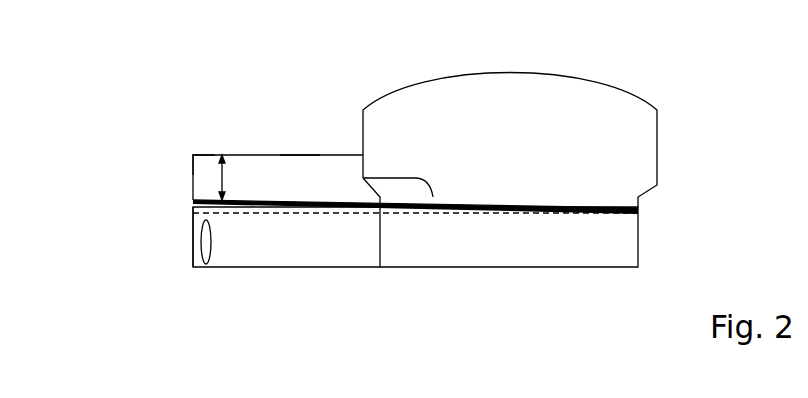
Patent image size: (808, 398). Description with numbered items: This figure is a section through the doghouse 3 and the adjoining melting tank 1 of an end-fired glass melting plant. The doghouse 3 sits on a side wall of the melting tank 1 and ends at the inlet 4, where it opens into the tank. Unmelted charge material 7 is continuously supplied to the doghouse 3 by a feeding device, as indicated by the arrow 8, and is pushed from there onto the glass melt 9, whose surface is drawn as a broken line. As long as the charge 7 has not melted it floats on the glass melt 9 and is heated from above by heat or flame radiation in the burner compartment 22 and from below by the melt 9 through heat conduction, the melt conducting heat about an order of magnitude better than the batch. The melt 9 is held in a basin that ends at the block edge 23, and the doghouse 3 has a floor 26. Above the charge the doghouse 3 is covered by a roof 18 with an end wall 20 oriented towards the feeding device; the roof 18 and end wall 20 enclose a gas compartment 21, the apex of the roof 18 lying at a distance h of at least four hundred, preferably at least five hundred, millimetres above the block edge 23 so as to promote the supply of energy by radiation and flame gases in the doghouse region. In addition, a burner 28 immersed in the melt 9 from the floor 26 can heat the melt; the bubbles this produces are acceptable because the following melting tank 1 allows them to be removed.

The melting tank 1 is at (653, 101).
The doghouse 3 is at (192, 152).
The inlet 4 is at (433, 197).
The charge material 7 is at (297, 213).
The arrow 8 is at (212, 184).
The glass melt 9 is at (577, 228).
The roof 18 is at (298, 155).
The end wall 20 is at (191, 234).
The gas compartment 21 is at (263, 175).
The burner compartment 22 is at (542, 103).
The block edge 23 is at (235, 208).
The floor 26 is at (333, 268).
The burner 28 is at (205, 268).